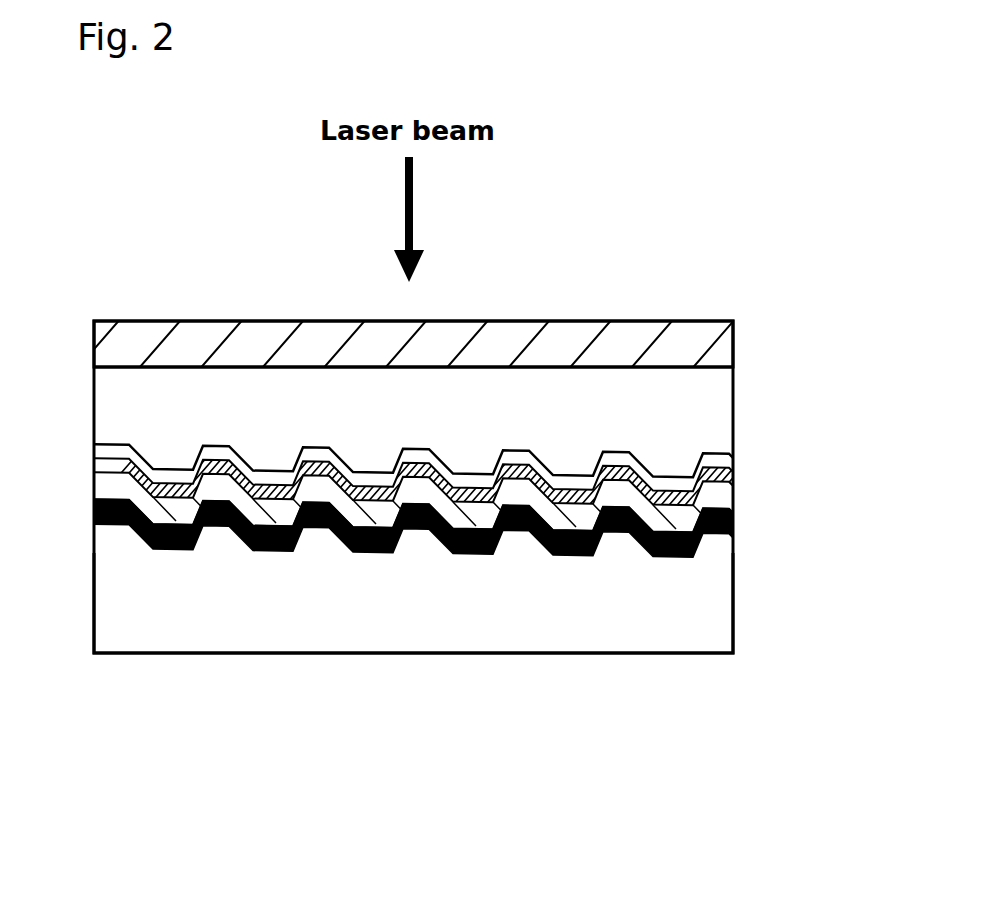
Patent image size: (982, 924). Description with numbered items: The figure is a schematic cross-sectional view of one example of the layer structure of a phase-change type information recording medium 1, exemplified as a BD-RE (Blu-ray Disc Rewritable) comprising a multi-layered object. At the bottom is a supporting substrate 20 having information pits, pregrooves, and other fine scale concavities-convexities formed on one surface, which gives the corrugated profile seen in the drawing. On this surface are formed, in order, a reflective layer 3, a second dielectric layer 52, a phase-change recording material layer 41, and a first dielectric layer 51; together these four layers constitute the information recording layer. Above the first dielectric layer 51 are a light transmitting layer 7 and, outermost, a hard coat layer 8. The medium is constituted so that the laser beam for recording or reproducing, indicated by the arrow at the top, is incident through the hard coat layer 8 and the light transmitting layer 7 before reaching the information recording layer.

The optical information recording medium 1 is at (440, 697).
The supporting substrate 20 is at (685, 623).
The hard coat layer 8 is at (675, 333).
The light transmitting layer 7 is at (703, 390).
The first dielectric layer 51 is at (722, 455).
The phase-change recording material layer 41 is at (720, 473).
The second dielectric layer 52 is at (733, 493).
The reflective layer 3 is at (735, 523).